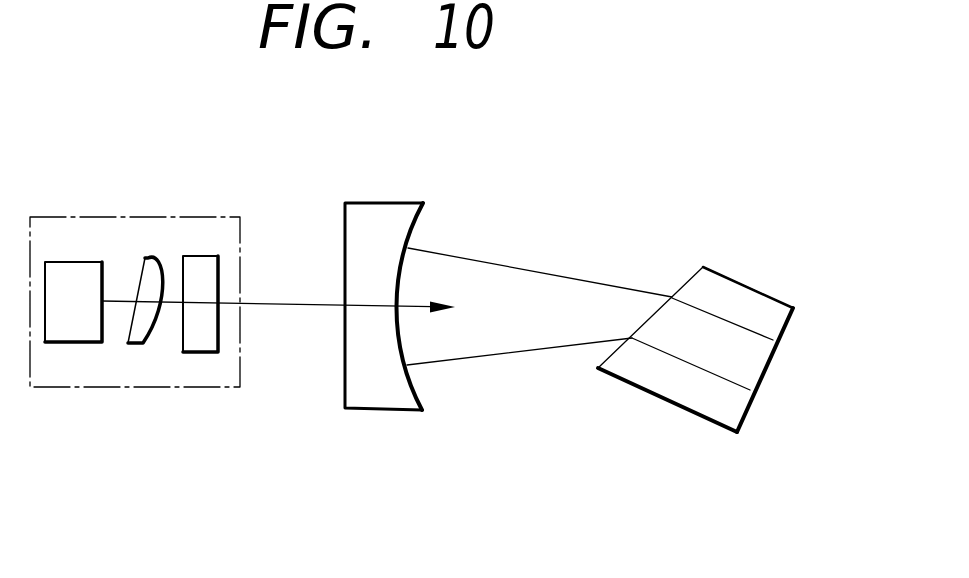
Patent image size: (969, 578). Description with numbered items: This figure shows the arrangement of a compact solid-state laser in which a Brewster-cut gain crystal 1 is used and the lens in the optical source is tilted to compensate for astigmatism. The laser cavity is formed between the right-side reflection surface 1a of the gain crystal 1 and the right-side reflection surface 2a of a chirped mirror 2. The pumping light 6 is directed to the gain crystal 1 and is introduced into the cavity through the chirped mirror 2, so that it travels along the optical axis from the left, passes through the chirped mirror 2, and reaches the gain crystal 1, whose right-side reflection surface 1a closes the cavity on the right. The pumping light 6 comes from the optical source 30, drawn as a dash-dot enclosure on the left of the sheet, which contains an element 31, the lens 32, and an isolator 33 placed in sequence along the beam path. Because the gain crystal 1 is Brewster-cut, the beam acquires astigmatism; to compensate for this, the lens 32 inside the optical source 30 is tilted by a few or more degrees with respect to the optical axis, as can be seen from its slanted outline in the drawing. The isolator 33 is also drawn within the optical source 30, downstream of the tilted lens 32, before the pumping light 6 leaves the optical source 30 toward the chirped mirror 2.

The gain crystal 1 is at (737, 295).
The right-side reflection surface 1a is at (787, 330).
The chirped mirror 2 is at (385, 207).
The right-side reflection surface 2a is at (417, 228).
The pumping light 6 is at (298, 310).
The optical source 30 is at (180, 217).
The light source 31 is at (73, 337).
The lens 32 is at (142, 338).
The isolator 33 is at (202, 343).